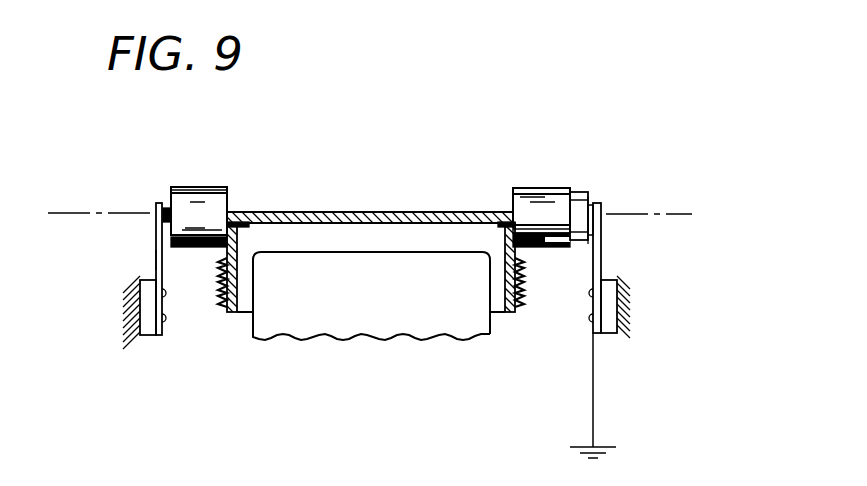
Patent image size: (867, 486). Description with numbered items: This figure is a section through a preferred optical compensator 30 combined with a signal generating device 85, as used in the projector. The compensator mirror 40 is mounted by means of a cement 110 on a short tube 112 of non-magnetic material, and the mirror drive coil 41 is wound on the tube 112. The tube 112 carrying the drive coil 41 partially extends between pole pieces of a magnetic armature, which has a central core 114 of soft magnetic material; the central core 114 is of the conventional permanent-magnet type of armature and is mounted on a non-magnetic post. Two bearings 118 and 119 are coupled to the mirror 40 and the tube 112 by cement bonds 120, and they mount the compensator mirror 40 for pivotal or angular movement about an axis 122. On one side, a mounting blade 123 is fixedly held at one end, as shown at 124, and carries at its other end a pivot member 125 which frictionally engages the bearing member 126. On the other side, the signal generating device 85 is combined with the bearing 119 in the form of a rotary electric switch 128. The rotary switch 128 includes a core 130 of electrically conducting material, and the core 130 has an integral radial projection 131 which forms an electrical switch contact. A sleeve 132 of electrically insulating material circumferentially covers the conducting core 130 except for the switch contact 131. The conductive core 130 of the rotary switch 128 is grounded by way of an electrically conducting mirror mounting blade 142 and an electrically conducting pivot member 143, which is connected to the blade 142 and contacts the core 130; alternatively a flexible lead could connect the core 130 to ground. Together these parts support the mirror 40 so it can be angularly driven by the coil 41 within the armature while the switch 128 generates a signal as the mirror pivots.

The optical compensator 30 is at (245, 324).
The compensator mirror 40 is at (437, 212).
The mirror drive coil 41 is at (219, 289).
The signal generating device 85 is at (563, 185).
The cement 110 is at (239, 227).
The short tube 112 is at (510, 313).
The central core 114 is at (371, 320).
The bearing 118 is at (182, 184).
The bearing 119 is at (600, 192).
The cement bonds 120 is at (230, 208).
The axis 122 is at (678, 215).
The mounting blade 123 is at (156, 259).
The fixed end of mounting blade 124 is at (146, 335).
The pivot member 125 is at (159, 203).
The bearing member 126 is at (251, 156).
The rotary electric switch 128 is at (528, 185).
The core 130 is at (584, 197).
The radial projection 131 is at (546, 248).
The sleeve 132 is at (548, 188).
The mirror mounting blade 142 is at (602, 267).
The pivot member 143 is at (593, 199).